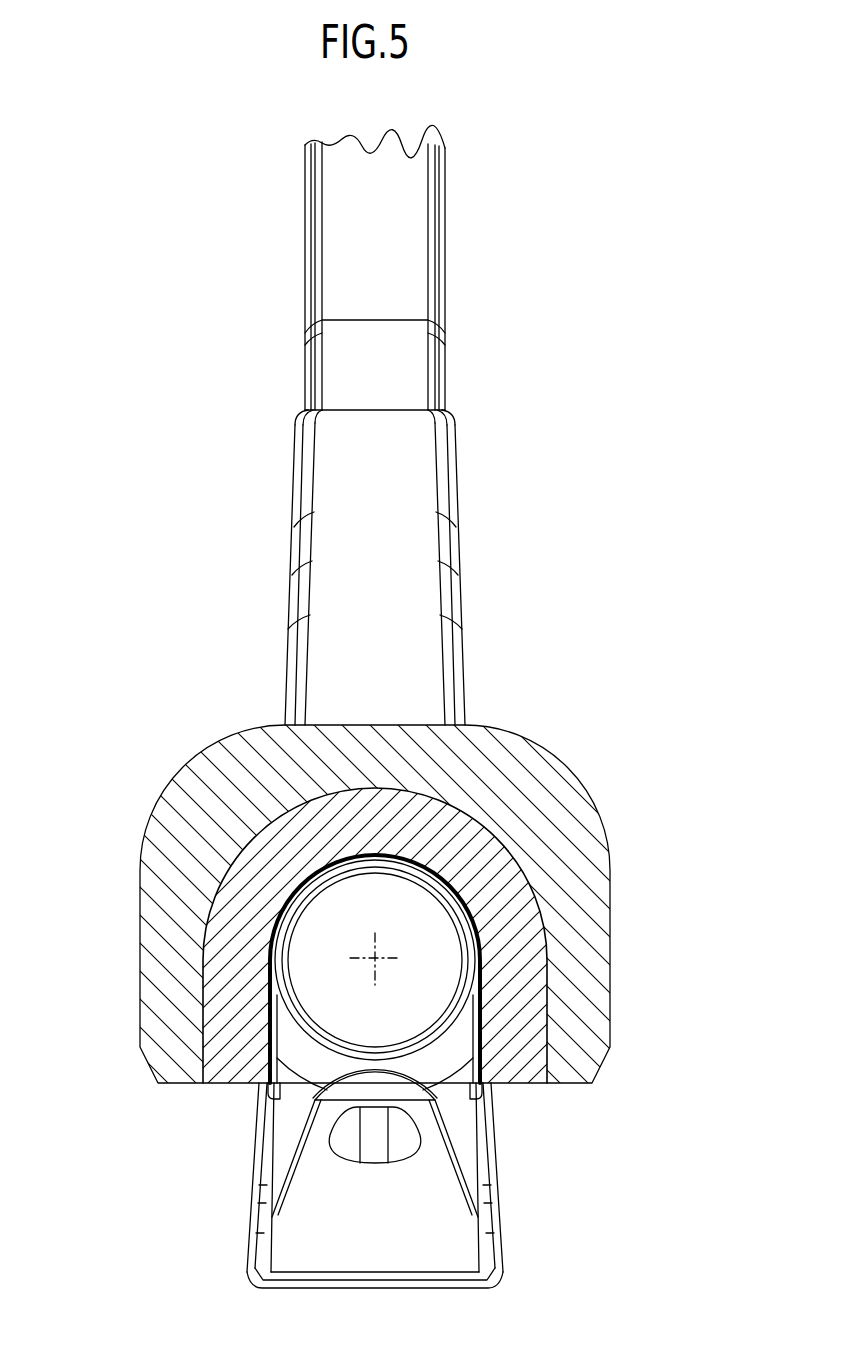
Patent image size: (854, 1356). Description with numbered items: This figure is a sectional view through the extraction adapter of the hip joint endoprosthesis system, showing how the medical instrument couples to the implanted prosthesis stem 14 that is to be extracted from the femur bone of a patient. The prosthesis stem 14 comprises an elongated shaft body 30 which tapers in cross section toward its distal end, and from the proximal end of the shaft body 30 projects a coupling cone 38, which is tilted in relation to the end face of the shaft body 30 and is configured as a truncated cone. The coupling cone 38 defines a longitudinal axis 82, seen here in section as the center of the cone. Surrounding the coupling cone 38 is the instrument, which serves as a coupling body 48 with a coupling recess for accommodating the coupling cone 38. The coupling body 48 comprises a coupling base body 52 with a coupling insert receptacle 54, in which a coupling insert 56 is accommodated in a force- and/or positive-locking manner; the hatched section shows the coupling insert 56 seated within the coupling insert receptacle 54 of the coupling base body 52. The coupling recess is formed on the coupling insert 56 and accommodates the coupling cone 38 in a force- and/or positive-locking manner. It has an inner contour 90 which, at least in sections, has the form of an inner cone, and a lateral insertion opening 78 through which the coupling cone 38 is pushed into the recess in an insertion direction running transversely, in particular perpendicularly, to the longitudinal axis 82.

The prosthesis stem 14 is at (468, 462).
The coupling body 48 is at (427, 905).
The coupling base body 52 is at (622, 908).
The coupling insert receptacle 54 is at (238, 858).
The coupling insert 56 is at (192, 972).
The coupling cone 38 is at (350, 926).
The longitudinal axis 82 is at (377, 956).
The inner contour 90 is at (466, 917).
The lateral insertion opening 78 is at (286, 1084).
The shaft body 30 is at (484, 1128).